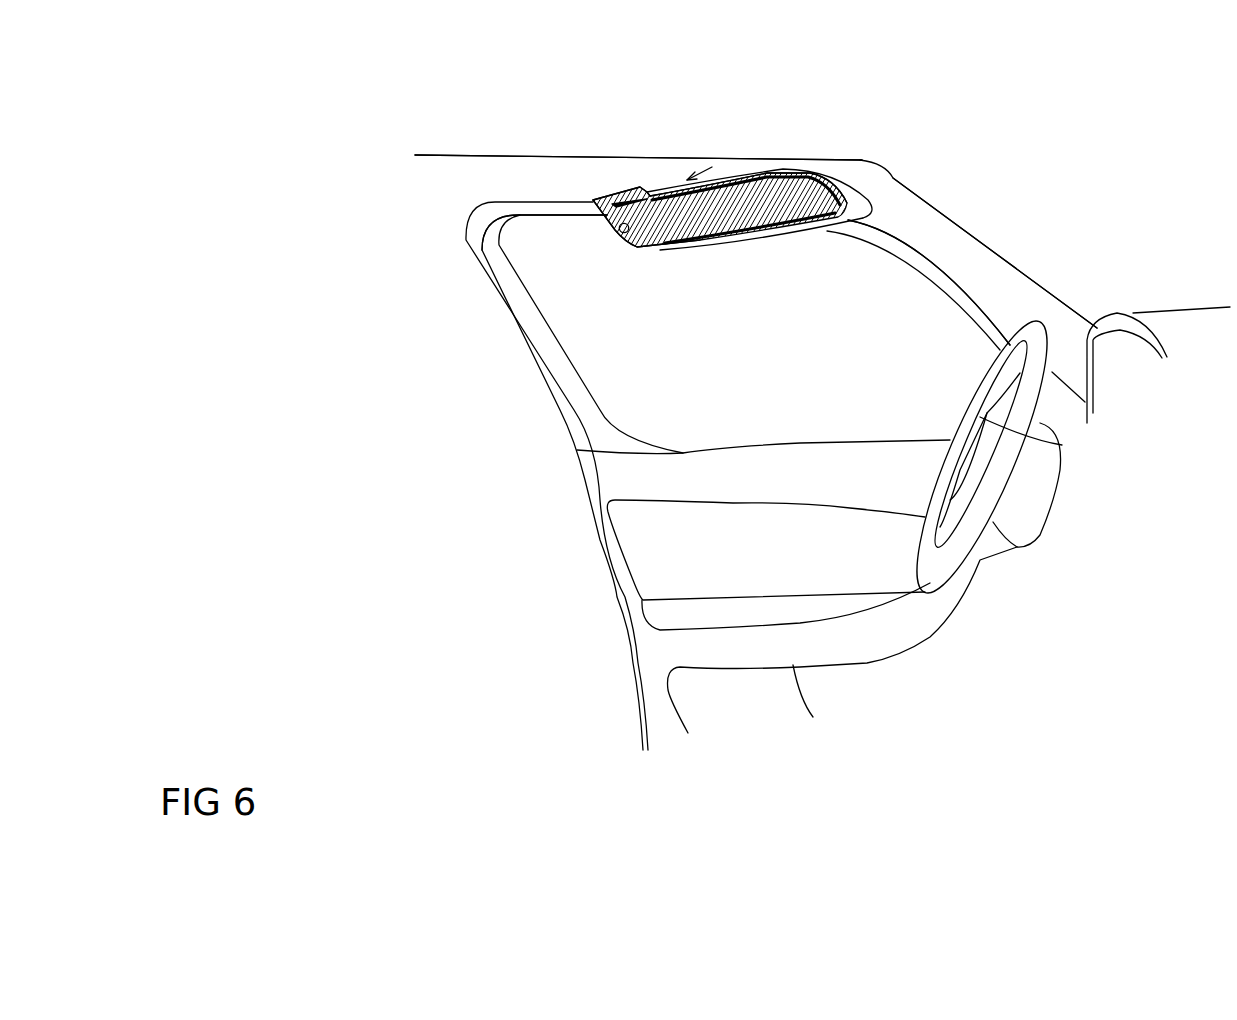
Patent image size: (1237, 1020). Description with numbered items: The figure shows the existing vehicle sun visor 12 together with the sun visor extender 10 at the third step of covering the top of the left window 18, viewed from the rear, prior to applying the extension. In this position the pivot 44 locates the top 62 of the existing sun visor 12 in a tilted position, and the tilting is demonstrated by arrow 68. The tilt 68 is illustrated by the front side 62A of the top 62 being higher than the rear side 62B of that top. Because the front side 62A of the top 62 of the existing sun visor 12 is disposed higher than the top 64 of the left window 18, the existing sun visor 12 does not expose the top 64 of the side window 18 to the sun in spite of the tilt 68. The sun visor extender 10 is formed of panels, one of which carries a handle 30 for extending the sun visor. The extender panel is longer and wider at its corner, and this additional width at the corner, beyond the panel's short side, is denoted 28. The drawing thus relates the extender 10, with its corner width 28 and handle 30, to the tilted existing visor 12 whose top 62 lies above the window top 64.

The sun visor extender 10 is at (685, 207).
The existing sun visor 12 is at (920, 196).
The left window 18 is at (940, 347).
The additional width at the corner 28 is at (590, 198).
The handle 30 is at (622, 243).
The pivot 44 is at (813, 173).
The top of the existing sun visor 62 is at (727, 177).
The front side of the top of the existing sun visor 62A is at (783, 170).
The rear side of the top of the existing sun visor 62B is at (648, 195).
The top of the left or the right window 64 is at (583, 218).
The tilting 68 is at (699, 167).